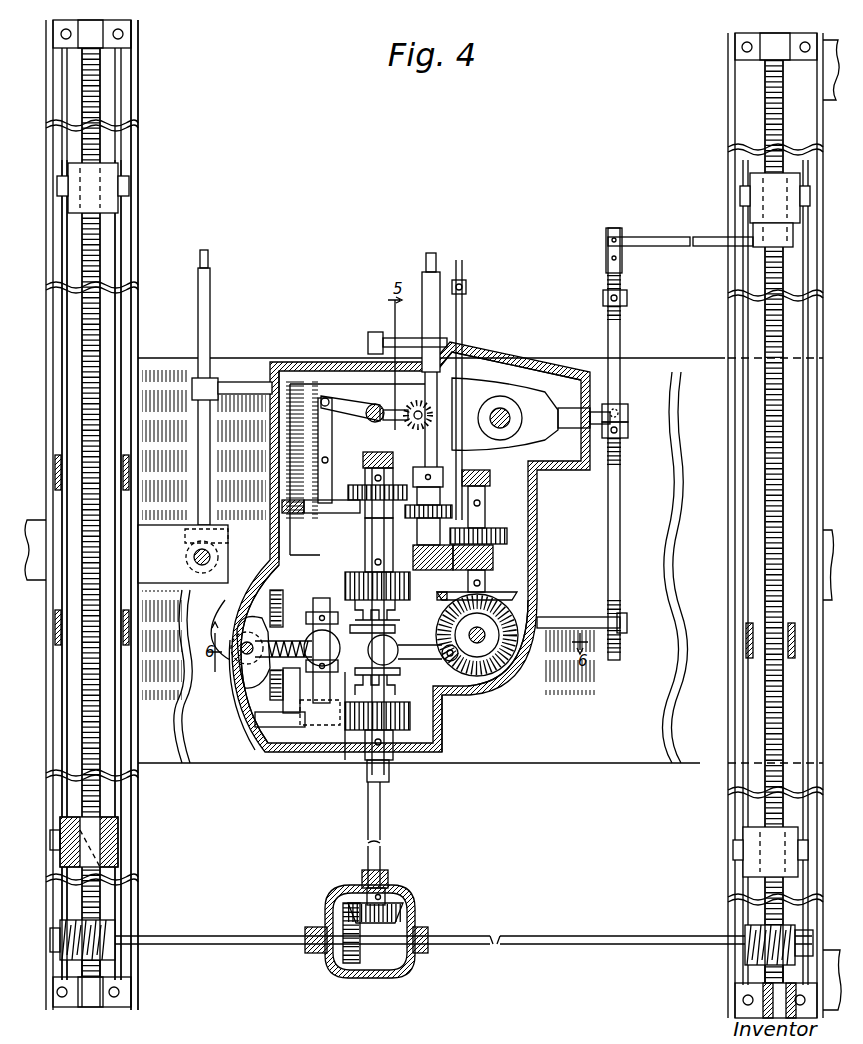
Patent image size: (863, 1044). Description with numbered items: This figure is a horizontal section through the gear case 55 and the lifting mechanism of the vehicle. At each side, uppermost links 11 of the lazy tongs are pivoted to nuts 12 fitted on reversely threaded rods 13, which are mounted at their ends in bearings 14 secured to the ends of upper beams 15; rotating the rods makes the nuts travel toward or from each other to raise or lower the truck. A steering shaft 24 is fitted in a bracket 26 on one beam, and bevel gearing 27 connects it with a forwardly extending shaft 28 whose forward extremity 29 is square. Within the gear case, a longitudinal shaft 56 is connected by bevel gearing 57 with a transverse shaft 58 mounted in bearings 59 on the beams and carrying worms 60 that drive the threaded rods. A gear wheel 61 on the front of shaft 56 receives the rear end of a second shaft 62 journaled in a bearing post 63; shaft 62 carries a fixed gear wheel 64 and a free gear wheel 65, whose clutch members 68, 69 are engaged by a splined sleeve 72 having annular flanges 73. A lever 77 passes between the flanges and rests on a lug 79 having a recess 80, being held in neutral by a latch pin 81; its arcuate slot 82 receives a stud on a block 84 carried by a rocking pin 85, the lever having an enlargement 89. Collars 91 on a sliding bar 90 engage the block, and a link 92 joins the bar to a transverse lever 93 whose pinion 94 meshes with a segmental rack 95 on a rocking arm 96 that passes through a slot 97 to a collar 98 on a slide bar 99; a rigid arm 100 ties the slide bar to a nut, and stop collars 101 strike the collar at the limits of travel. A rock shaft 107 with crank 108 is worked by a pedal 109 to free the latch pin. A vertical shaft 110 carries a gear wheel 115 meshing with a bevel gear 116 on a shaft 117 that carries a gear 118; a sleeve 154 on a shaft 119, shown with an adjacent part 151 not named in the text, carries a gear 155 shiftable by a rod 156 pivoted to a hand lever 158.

The uppermost links 11 is at (70, 806).
The nuts 12 is at (105, 172).
The worm shafts or threaded rods 13 is at (110, 760).
The bearings 14 is at (88, 1002).
The upper channel bars or beams 15 is at (140, 962).
The steering shaft 24 is at (194, 557).
The bracket 26 is at (170, 525).
The bevel gearing 27 is at (216, 525).
The forwardly extending shaft 28 is at (211, 335).
The square extremity 29 is at (209, 262).
The gear case 55 is at (500, 690).
The longitudinal shaft 56 is at (382, 826).
The bevel gearing 57 is at (350, 965).
The transverse shaft 58 is at (503, 947).
The bearings 59 is at (92, 910).
The worms 60 is at (110, 922).
The gear wheel 61 is at (442, 712).
The second shaft 62 is at (372, 522).
The bearing post 63 is at (378, 452).
The gear wheel 64 is at (352, 485).
The gear wheel 65 is at (345, 578).
The clutch member 68 is at (378, 704).
The clutch member 69 is at (290, 600).
The sleeve 72 is at (453, 662).
The annular flanges 73 is at (398, 604).
The lever 77 is at (432, 652).
The lug 79 is at (252, 695).
The recess 80 is at (244, 613).
The latch pin 81 is at (240, 665).
The arcuate slot 82 is at (310, 712).
The block 84 is at (275, 625).
The pin 85 is at (312, 652).
The enlargement 89 is at (338, 675).
The sliding bar 90 is at (288, 516).
The collars 91 is at (283, 607).
The link 92 is at (276, 440).
The transverse lever 93 is at (332, 398).
The pinion 94 is at (402, 412).
The segmental rack 95 is at (470, 405).
The rocking arm 96 is at (540, 405).
The slot or opening 97 is at (597, 415).
The collar 98 is at (626, 412).
The slide bar 99 is at (620, 540).
The link or rigid arm 100 is at (672, 237).
The stop collars 101 is at (630, 298).
The rock shaft 107 is at (465, 355).
The crank 108 is at (428, 330).
The pedal or push rod 109 is at (378, 334).
The vertical shaft 110 is at (487, 632).
The gear wheel 115 is at (508, 665).
The bevel gear 116 is at (512, 610).
The shaft 117 is at (487, 517).
The gear 118 is at (507, 534).
The shaft 119 is at (467, 298).
The collar 151 is at (422, 470).
The sleeve 154 is at (470, 488).
The gear 155 is at (412, 510).
The rod 156 is at (464, 315).
The hand lever 158 is at (461, 282).